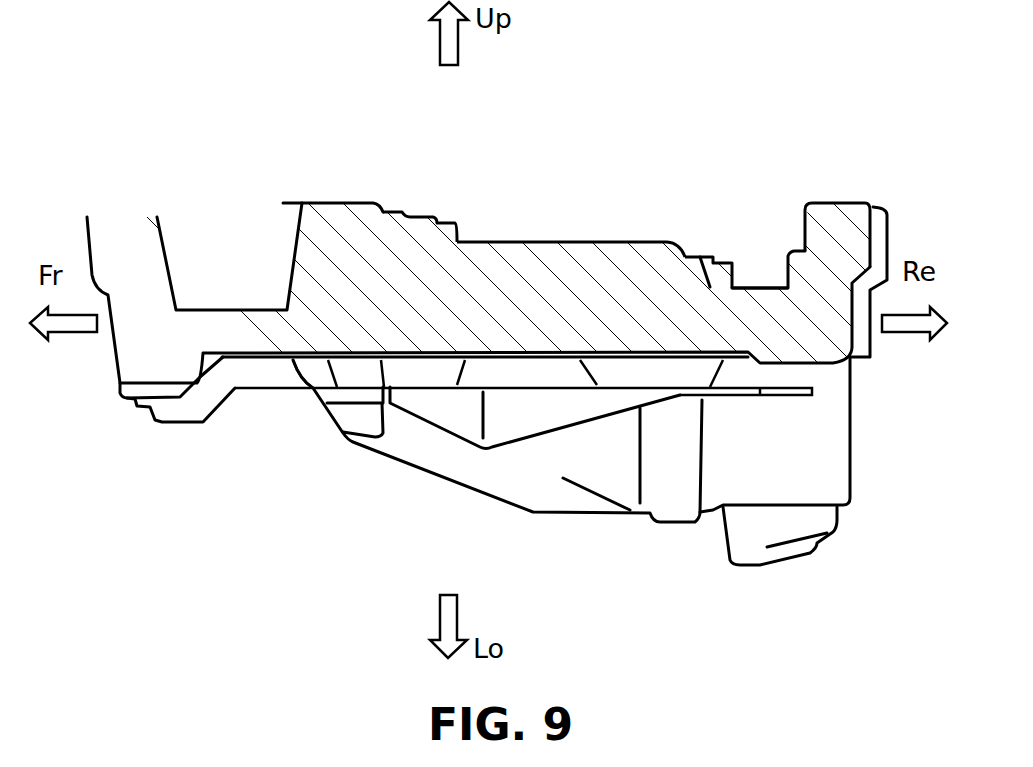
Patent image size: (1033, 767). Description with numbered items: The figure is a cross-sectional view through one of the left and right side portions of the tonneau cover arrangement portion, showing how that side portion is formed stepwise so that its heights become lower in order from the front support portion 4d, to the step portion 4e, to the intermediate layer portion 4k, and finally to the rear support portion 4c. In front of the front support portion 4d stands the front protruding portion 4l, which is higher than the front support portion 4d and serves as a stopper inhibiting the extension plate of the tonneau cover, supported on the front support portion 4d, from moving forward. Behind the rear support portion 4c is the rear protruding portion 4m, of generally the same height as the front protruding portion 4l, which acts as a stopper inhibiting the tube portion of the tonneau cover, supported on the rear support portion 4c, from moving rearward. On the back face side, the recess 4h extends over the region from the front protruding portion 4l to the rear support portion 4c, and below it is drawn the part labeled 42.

The front protruding portion 4l is at (333, 190).
The front support portion 4d is at (410, 205).
The step portion 4e is at (546, 233).
The intermediate layer portion 4k is at (691, 250).
The rear support portion 4c is at (760, 249).
The rear protruding portion 4m is at (844, 194).
The recess 4h is at (419, 375).
The bracket 42 is at (363, 448).